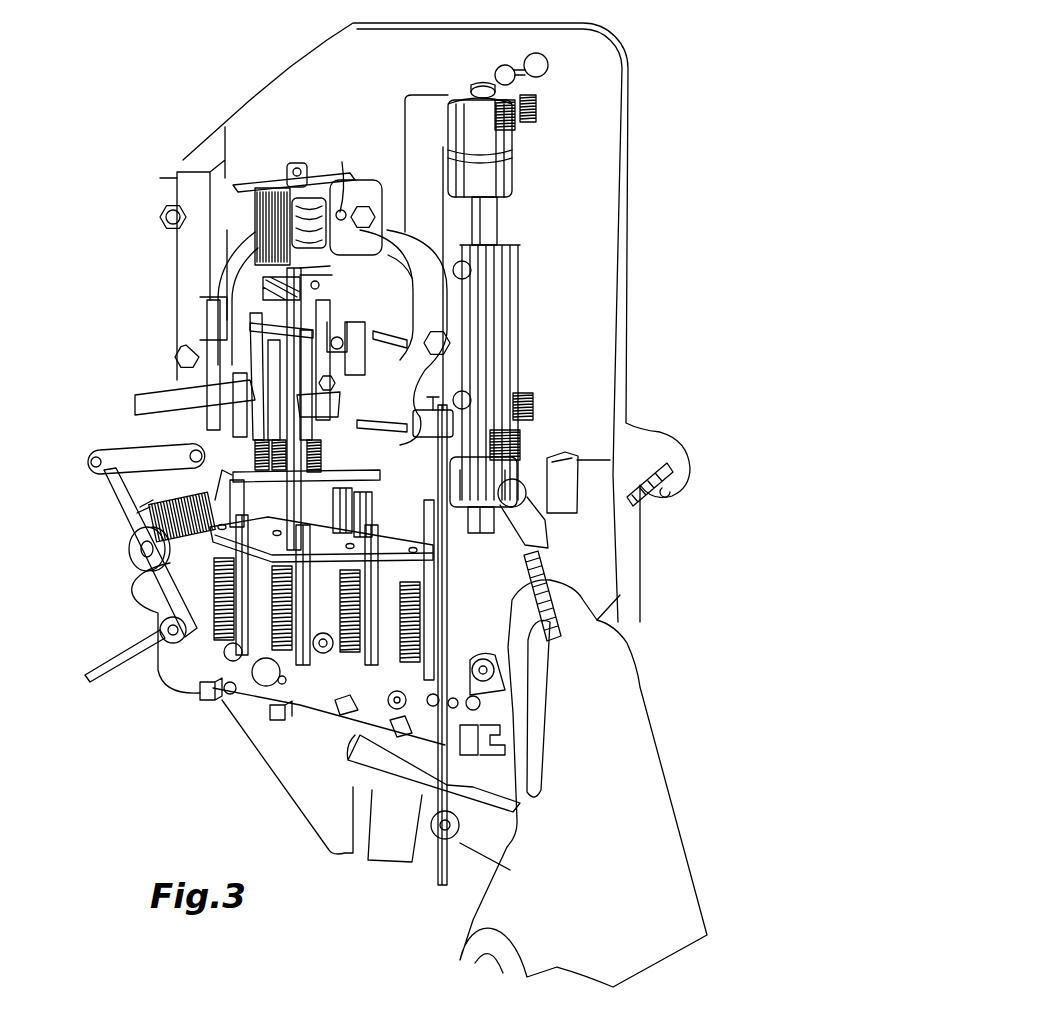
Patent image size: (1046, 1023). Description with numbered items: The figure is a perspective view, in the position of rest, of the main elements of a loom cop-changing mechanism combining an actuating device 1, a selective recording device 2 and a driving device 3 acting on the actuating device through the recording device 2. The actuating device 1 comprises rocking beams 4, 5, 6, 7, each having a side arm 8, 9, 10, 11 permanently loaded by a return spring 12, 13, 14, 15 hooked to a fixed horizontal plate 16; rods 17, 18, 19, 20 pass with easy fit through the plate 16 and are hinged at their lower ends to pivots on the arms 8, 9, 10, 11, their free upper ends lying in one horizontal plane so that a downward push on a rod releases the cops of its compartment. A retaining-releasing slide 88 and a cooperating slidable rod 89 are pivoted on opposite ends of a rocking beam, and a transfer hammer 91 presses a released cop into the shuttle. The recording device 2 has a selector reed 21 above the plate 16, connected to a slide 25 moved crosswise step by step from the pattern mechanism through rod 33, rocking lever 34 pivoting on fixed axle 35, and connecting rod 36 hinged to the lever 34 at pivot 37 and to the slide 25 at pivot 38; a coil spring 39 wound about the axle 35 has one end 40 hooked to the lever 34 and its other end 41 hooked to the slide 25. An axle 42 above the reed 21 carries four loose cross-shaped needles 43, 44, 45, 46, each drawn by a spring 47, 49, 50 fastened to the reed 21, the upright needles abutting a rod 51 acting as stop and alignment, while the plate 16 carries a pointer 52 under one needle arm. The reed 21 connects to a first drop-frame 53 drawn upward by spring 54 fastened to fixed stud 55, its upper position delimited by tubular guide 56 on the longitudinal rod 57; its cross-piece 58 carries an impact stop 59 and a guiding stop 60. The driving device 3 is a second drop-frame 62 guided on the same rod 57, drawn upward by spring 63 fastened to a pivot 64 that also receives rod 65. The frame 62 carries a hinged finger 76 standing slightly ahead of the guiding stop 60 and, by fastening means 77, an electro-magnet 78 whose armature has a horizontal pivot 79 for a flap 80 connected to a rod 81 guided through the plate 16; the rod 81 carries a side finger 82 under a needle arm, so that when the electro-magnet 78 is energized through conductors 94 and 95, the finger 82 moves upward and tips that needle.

The actuating device 1 is at (182, 775).
The selective recording device 2 is at (139, 354).
The driving device 3 is at (230, 106).
The rocking beam 4 is at (460, 748).
The rocking beam 5 is at (385, 730).
The rocking beam 6 is at (297, 712).
The rocking beam 7 is at (222, 700).
The side arm 8 is at (414, 718).
The side arm 9 is at (335, 674).
The side arm 10 is at (269, 686).
The side arm 11 is at (222, 660).
The return spring 12 is at (410, 620).
The return spring 13 is at (345, 582).
The return spring 14 is at (250, 622).
The return spring 15 is at (220, 628).
The horizontal plate 16 is at (386, 535).
The rod 17 is at (430, 505).
The rod 18 is at (362, 582).
The rod 19 is at (300, 602).
The rod 20 is at (238, 595).
The selector reed 21 is at (382, 472).
The slide 25 is at (222, 470).
The rod 33 is at (118, 668).
The rocking lever 34 is at (116, 502).
The fixed axle 35 is at (140, 553).
The connecting rod 36 is at (120, 432).
The pivot 37 is at (95, 463).
The pivot 38 is at (190, 453).
The coil spring 39 is at (187, 536).
The spring end 40 is at (137, 515).
The spring end 41 is at (217, 500).
The axle 42 is at (338, 383).
The needle 43 is at (345, 360).
The needle 44 is at (278, 400).
The needle 45 is at (258, 400).
The needle 46 is at (245, 393).
The spring 47 is at (339, 488).
The spring 49 is at (274, 471).
The spring 50 is at (249, 483).
The rod 51 is at (398, 320).
The pointer 52 is at (350, 449).
The first drop-frame 53 is at (362, 372).
The spring 54 is at (540, 112).
The fixed stud 55 is at (548, 70).
The tubular guide 56 is at (518, 300).
The longitudinal rod 57 is at (497, 210).
The cross-piece 58 is at (400, 266).
The impact stop 59 is at (358, 376).
The guiding stop 60 is at (340, 322).
The second drop-frame 62 is at (233, 228).
The spring 63 is at (518, 130).
The pivot 64 is at (515, 520).
The rod 65 is at (555, 580).
The finger 76 is at (332, 276).
The fastening means 77 is at (358, 190).
The electro-magnet 78 is at (265, 207).
The horizontal pivot 79 is at (319, 286).
The flap 80 is at (263, 290).
The rod 81 is at (292, 510).
The side finger 82 is at (305, 415).
The retaining-releasing slide 88 is at (478, 752).
The slidable rod 89 is at (496, 676).
The transfer hammer 91 is at (366, 773).
The conductor 94 is at (283, 170).
The conductor 95 is at (342, 162).